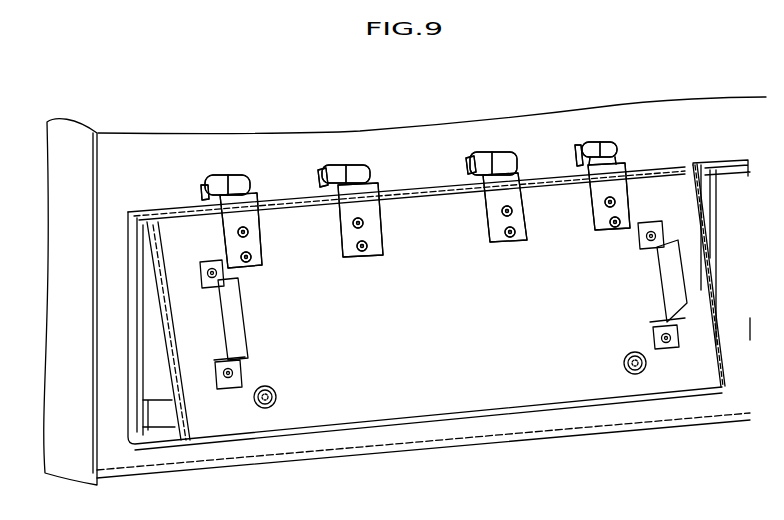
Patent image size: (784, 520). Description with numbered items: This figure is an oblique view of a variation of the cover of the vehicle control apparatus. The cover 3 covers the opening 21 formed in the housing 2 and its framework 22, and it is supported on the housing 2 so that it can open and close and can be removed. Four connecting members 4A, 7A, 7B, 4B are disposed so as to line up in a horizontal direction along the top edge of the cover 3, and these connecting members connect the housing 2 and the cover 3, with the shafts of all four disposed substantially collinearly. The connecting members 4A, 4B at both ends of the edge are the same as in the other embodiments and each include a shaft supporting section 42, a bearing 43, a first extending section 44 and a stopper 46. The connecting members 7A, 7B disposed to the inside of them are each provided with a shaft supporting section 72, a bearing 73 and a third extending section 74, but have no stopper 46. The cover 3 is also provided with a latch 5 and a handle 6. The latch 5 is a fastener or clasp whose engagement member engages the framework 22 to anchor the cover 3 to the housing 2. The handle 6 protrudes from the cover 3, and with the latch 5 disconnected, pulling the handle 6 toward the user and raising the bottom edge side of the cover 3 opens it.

The housing 2 is at (565, 420).
The cover 3 is at (478, 387).
The connecting member 4A is at (257, 170).
The connecting member 4B is at (622, 140).
The latch 5 is at (273, 406).
The handle 6 is at (237, 343).
The connecting member 7A is at (371, 162).
The connecting member 7B is at (511, 147).
The opening 21 is at (162, 427).
The framework 22 is at (138, 333).
The shaft supporting section 42 is at (240, 175).
The bearing 43 is at (220, 175).
The first extending section 44 is at (250, 189).
The stopper 46 is at (208, 194).
The shaft supporting section 72 is at (355, 166).
The bearing 73 is at (328, 168).
The third extending section 74 is at (370, 187).